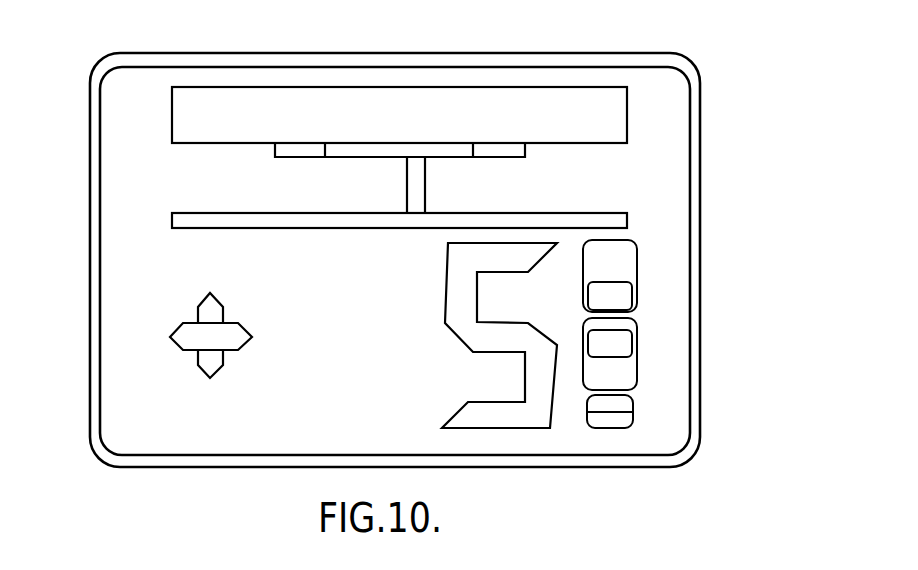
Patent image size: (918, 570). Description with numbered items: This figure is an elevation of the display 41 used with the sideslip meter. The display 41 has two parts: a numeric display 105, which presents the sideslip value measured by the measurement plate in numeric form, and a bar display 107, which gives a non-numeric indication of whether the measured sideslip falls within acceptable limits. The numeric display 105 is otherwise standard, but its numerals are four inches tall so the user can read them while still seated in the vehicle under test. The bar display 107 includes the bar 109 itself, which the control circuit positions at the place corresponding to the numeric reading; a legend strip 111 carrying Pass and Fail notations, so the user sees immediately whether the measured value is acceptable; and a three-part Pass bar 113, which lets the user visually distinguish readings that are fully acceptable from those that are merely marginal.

The numeric display 105 is at (543, 470).
The bar display 107 is at (786, 135).
The display 41 is at (743, 275).
The bar 109 is at (413, 168).
The legend strip 111 is at (525, 108).
The three-part "Pass" bar 113 is at (348, 151).